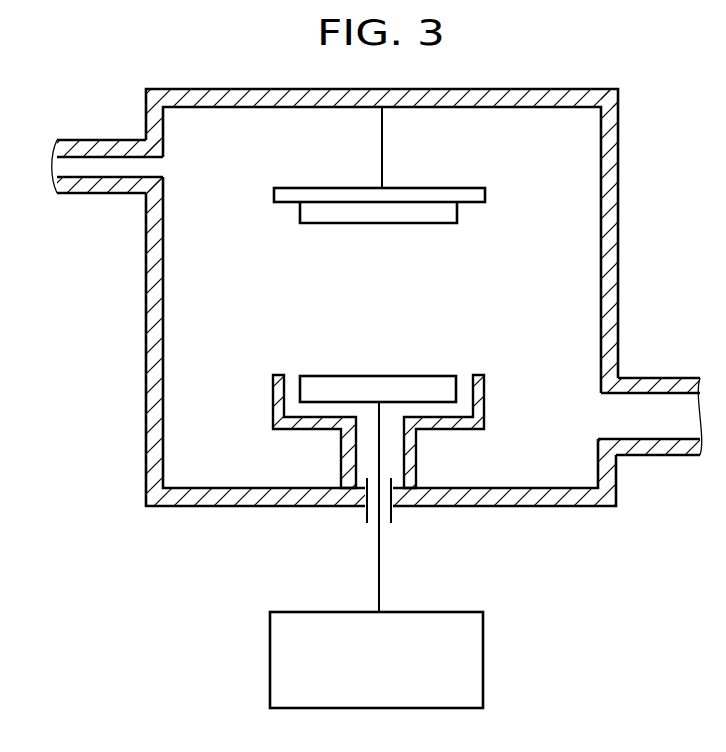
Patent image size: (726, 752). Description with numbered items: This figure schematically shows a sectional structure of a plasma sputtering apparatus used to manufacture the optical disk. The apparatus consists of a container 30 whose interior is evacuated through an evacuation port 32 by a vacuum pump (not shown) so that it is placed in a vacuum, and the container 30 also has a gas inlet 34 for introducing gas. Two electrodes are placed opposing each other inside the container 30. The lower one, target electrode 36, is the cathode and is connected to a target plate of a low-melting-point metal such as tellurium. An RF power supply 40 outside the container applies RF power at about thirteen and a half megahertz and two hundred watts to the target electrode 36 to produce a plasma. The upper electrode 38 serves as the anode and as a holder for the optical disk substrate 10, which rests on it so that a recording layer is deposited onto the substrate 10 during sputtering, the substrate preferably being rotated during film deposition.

The optical disk substrate 10 is at (330, 214).
The container 30 is at (614, 158).
The evacuation port 32 is at (643, 403).
The gas inlet 34 is at (94, 141).
The target electrode 36 is at (425, 384).
The counter electrode 38 is at (431, 193).
The RF power supply 40 is at (477, 658).